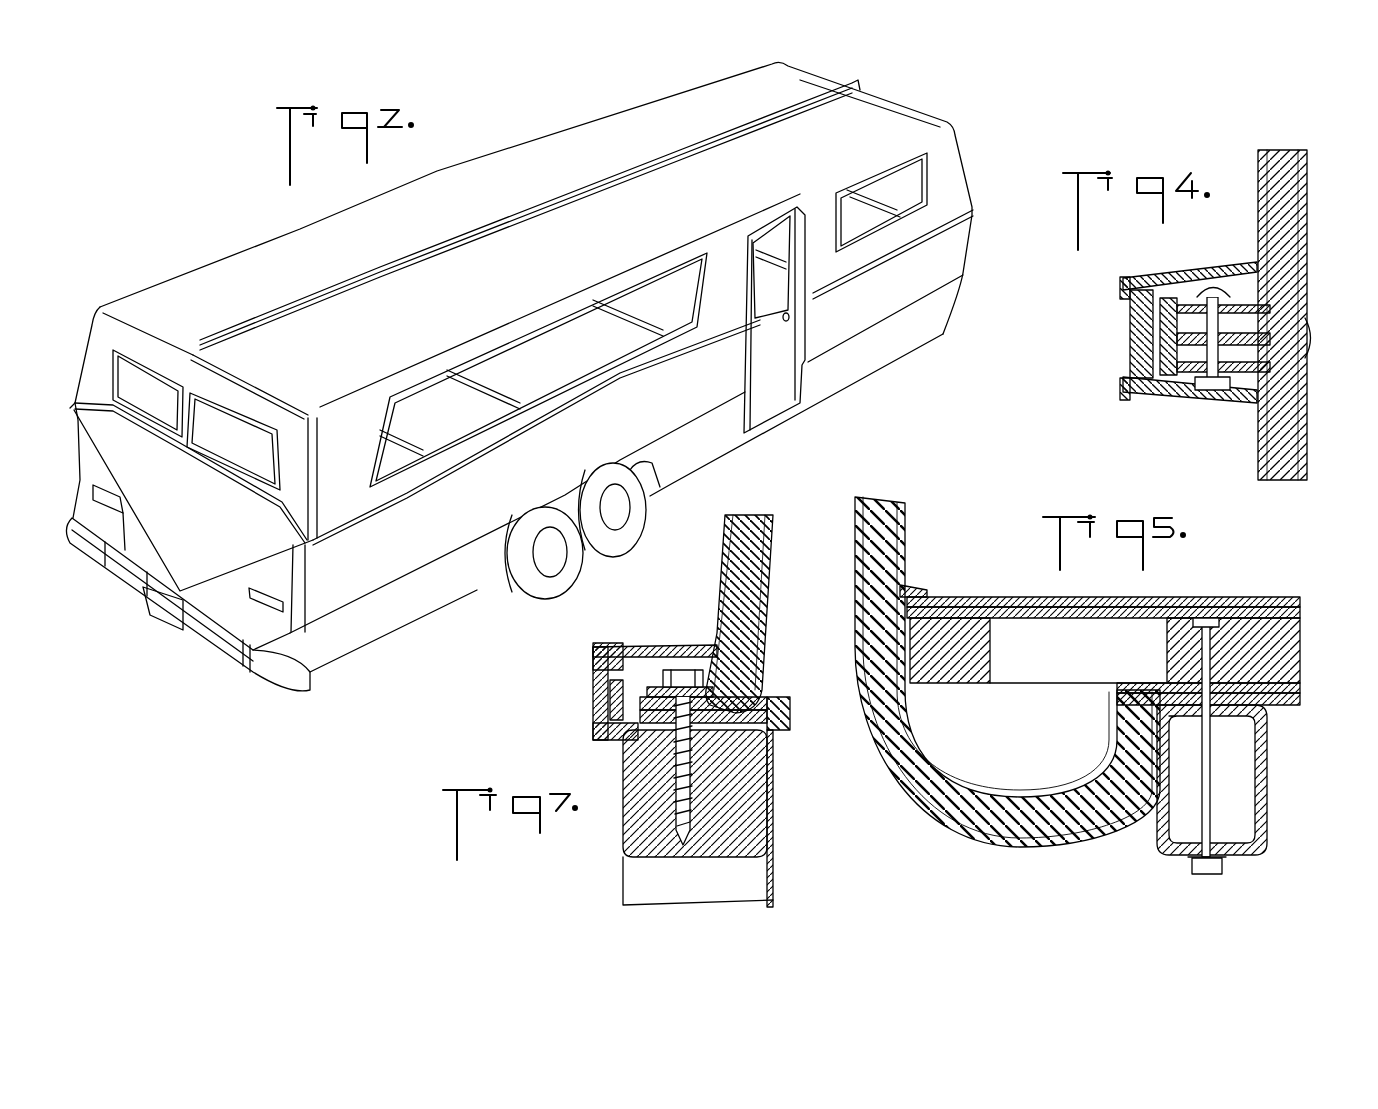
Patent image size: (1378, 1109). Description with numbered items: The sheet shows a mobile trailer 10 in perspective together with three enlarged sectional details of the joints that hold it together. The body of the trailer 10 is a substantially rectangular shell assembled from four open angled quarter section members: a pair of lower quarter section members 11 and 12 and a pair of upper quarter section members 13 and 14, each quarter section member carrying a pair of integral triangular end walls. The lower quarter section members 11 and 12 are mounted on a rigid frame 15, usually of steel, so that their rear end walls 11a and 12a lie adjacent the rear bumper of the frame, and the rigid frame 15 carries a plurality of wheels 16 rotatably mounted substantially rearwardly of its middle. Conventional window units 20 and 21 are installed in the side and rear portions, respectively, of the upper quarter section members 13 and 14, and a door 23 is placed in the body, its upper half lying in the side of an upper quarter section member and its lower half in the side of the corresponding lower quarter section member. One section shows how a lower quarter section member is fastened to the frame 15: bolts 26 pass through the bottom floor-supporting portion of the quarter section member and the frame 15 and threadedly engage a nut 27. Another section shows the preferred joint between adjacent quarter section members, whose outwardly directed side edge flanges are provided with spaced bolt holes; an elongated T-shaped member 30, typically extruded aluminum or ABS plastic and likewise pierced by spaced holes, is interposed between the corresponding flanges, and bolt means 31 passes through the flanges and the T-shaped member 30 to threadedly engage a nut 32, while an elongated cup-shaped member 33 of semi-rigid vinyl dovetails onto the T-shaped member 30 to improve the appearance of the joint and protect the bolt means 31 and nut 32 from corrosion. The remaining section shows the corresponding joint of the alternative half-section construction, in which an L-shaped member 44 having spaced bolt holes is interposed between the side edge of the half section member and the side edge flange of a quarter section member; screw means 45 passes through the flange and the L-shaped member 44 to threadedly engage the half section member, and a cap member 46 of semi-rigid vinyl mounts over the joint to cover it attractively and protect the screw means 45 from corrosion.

In FIG. 1, the mobile trailer 10 is at (560, 118).
In FIG. 1, the lower quarter section member 11 is at (488, 518).
In FIG. 1, the rear end wall 11a is at (223, 593).
In FIG. 1, the lower quarter section member 12 is at (78, 448).
In FIG. 1, the rear end wall 12a is at (143, 557).
In FIG. 1, the upper quarter section member 13 is at (373, 217).
In FIG. 1, the upper quarter section member 14 is at (913, 120).
In FIG. 5, the rigid frame 15 is at (1268, 762).
In FIG. 1, the wheels 16 is at (547, 580).
In FIG. 1, the window units 20 is at (893, 178).
In FIG. 1, the window units 21 is at (222, 427).
In FIG. 1, the door 23 is at (777, 393).
In FIG. 5, the bolts 26 is at (1212, 650).
In FIG. 5, the nut 27 is at (1226, 868).
In FIG. 4, the elongated T-shaped member 30 is at (1310, 337).
In FIG. 4, the bolt means 31 is at (1200, 296).
In FIG. 4, the nut 32 is at (1240, 403).
In FIG. 4, the elongated cup-shaped member 33 is at (1178, 403).
In FIG. 7, the L-shaped member 44 is at (615, 742).
In FIG. 7, the screw means 45 is at (690, 803).
In FIG. 7, the cap member 46 is at (593, 693).